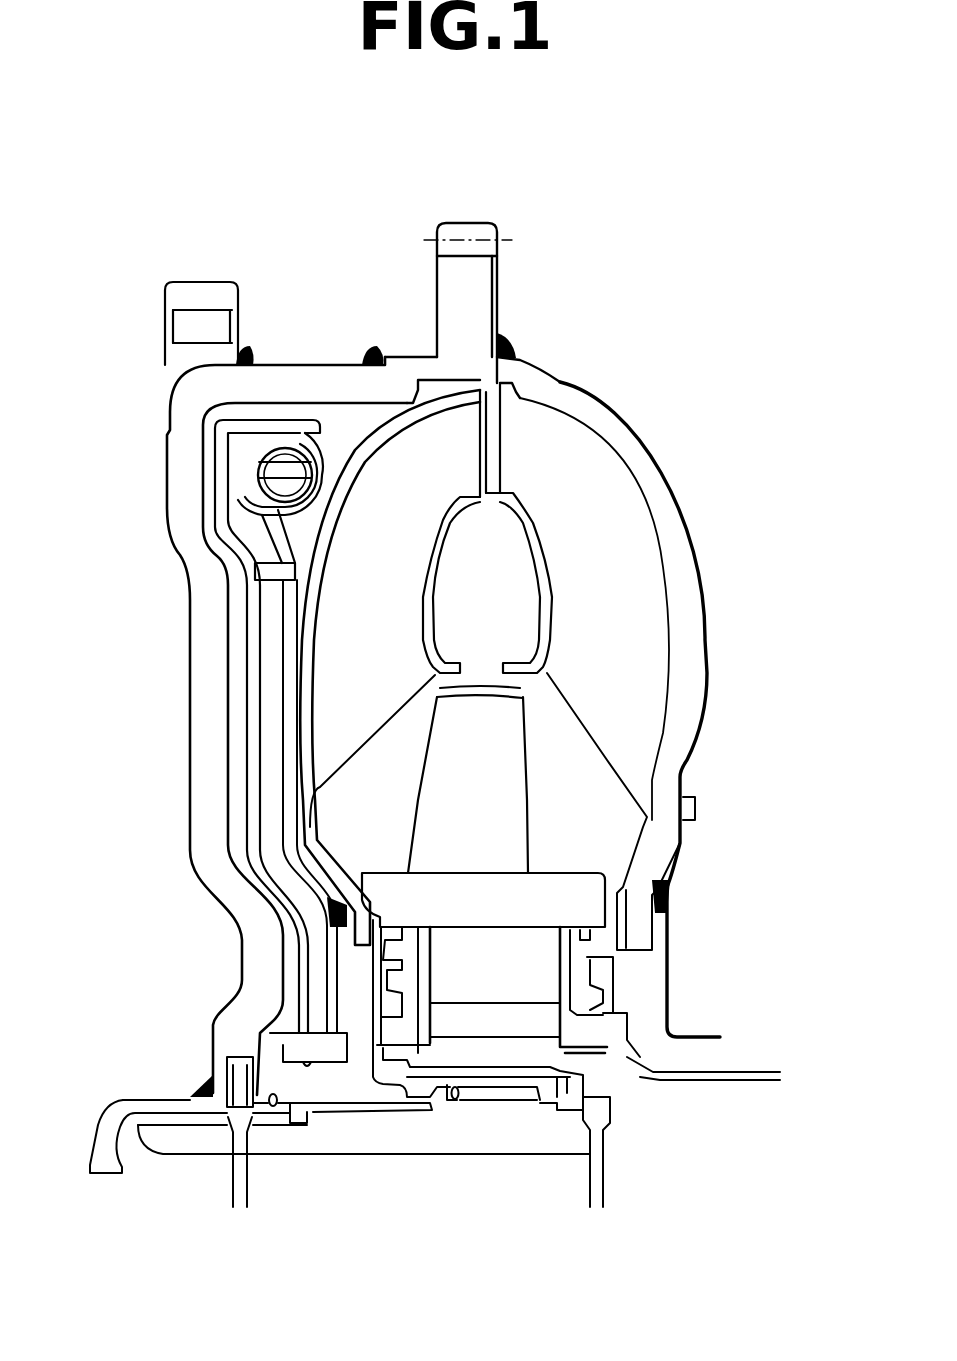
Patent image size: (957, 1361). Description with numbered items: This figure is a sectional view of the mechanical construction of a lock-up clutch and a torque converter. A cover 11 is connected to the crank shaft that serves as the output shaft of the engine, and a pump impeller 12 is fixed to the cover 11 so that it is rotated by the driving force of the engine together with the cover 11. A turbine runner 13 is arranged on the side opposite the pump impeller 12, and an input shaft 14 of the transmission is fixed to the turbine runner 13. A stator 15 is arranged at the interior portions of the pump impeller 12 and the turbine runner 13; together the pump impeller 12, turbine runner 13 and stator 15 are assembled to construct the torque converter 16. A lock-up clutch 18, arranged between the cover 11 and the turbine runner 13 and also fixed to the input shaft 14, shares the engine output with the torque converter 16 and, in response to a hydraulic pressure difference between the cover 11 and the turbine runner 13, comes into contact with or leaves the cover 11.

The cover 11 is at (197, 770).
The pump impeller 12 is at (637, 568).
The turbine runner 13 is at (320, 650).
The input shaft 14 is at (363, 1140).
The stator 15 is at (513, 813).
The torque converter 16 is at (671, 453).
The lock-up clutch 18 is at (218, 467).